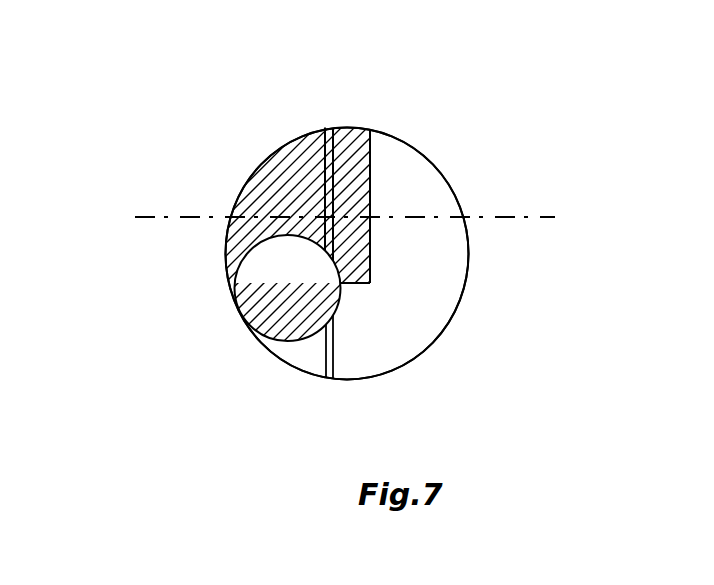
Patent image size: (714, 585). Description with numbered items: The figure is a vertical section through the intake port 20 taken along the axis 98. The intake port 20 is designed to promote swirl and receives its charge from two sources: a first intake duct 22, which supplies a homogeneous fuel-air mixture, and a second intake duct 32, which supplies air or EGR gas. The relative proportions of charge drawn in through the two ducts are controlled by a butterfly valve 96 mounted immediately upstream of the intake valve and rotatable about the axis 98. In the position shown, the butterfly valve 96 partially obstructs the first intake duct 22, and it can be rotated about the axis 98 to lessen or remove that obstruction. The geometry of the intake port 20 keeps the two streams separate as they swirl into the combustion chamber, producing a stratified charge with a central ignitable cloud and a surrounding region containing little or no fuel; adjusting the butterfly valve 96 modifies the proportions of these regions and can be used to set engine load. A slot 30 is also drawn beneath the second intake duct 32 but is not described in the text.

The intake port 20 is at (459, 307).
The first intake duct 22 is at (413, 240).
The slot 30 is at (327, 353).
The second intake duct 32 is at (280, 297).
The butterfly valve 96 is at (297, 188).
The axis 98 is at (180, 216).